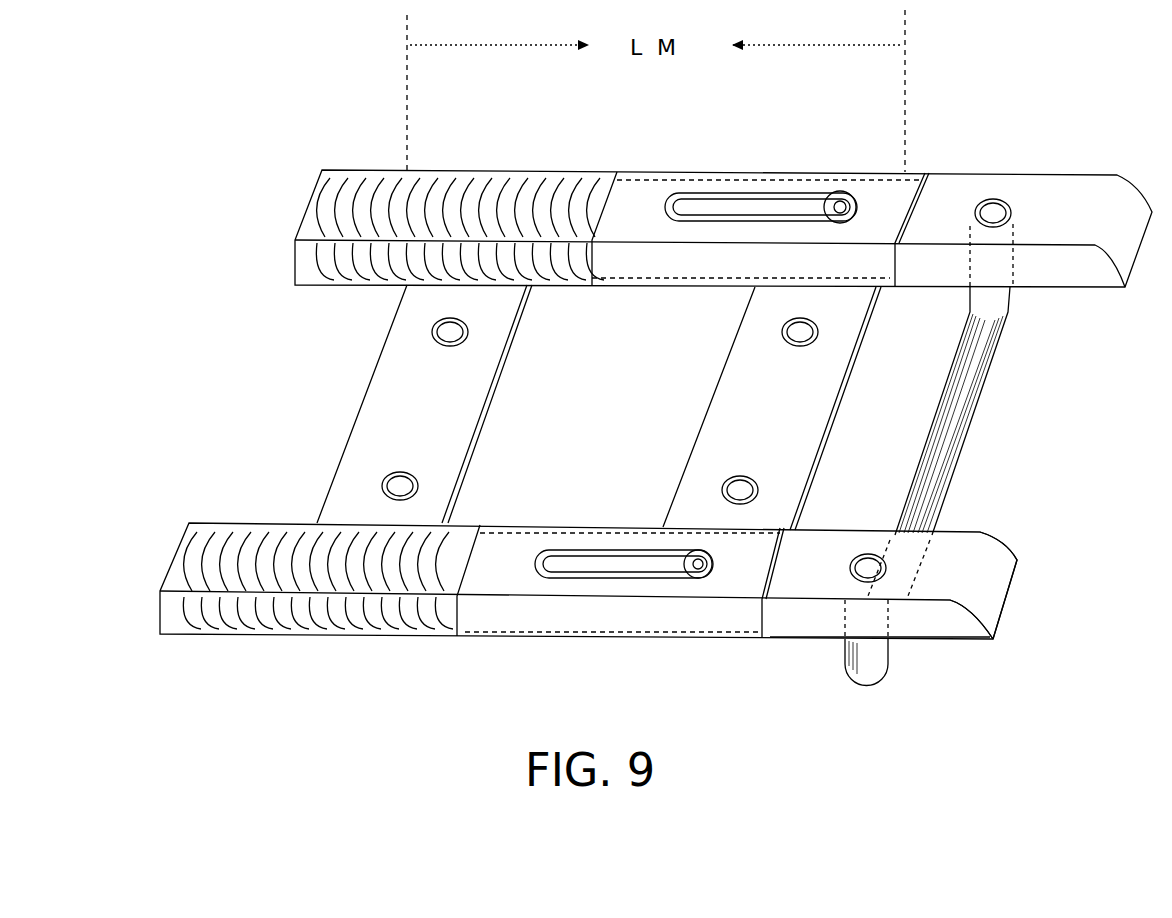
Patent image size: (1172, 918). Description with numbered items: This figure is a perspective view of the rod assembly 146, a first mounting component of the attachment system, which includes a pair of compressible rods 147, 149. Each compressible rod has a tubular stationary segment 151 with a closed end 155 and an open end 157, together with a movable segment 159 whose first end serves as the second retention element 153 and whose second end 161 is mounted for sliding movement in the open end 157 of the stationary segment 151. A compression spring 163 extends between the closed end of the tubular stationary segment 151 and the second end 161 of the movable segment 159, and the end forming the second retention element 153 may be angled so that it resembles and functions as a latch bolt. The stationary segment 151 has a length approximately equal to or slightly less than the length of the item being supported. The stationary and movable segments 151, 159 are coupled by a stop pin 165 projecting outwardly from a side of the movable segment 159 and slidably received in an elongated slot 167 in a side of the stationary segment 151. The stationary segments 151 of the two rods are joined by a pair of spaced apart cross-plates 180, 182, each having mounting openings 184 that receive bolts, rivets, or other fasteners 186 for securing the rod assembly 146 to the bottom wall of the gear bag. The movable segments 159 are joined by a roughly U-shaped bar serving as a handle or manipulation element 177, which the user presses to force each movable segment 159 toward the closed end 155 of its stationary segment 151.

The rod assembly 146 is at (240, 136).
The compressible rod 147 is at (698, 158).
The compressible rod 149 is at (335, 643).
The tubular stationary segment 151 is at (508, 516).
The second retention element 153 is at (993, 581).
The closed end 155 is at (170, 556).
The open end 157 is at (783, 558).
The movable segment 159 is at (816, 632).
The second end 161 is at (457, 636).
The compression spring 163 is at (396, 210).
The stop pin 165 is at (852, 203).
The elongated slot 167 is at (770, 210).
The manipulation element 177 is at (943, 445).
The cross-plate 180 is at (828, 373).
The cross-plate 182 is at (450, 404).
The mounting opening 184 is at (432, 331).
The fastener 186 is at (453, 334).